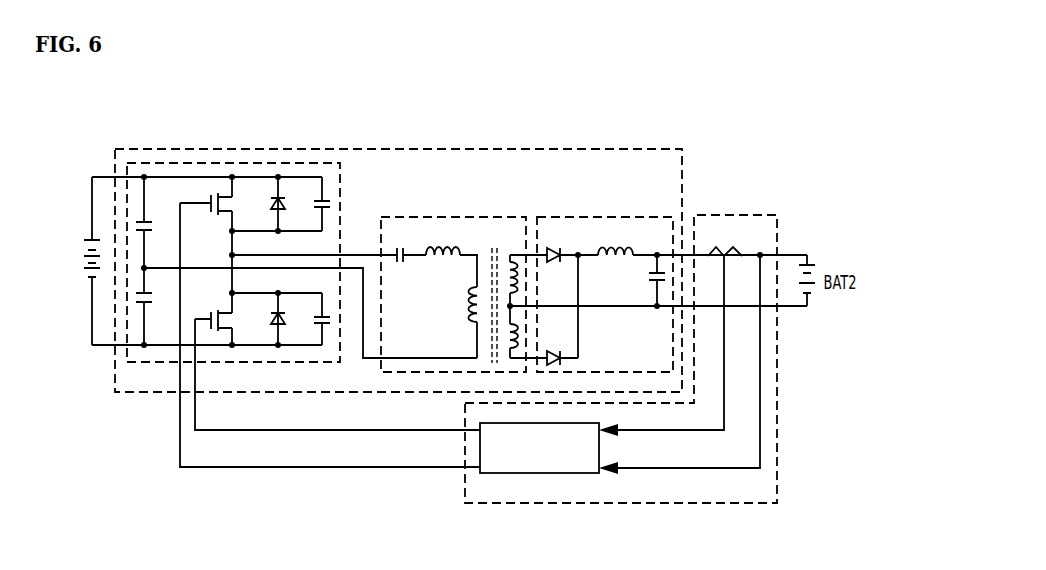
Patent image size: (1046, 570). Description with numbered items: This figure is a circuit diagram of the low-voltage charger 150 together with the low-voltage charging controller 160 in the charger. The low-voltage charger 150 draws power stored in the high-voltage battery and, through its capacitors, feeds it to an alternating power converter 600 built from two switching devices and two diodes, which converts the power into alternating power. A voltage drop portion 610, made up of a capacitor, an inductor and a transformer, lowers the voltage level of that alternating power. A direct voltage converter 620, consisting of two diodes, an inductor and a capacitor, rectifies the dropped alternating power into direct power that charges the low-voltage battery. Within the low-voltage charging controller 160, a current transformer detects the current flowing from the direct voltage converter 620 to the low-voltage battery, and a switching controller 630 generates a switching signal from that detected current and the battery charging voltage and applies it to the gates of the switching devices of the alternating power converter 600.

The low-voltage charger 150 is at (382, 148).
The alternating power converter 600 is at (341, 184).
The voltage drop portion 610 is at (467, 217).
The direct voltage converter 620 is at (591, 217).
The switching controller 630 is at (582, 474).
The low-voltage charging controller 160 is at (621, 387).